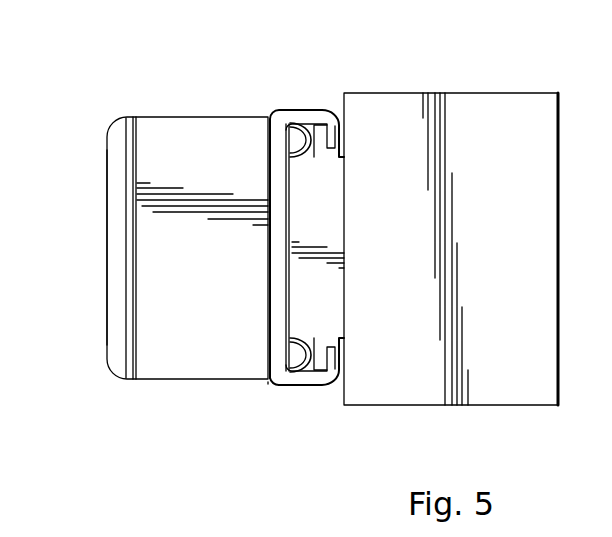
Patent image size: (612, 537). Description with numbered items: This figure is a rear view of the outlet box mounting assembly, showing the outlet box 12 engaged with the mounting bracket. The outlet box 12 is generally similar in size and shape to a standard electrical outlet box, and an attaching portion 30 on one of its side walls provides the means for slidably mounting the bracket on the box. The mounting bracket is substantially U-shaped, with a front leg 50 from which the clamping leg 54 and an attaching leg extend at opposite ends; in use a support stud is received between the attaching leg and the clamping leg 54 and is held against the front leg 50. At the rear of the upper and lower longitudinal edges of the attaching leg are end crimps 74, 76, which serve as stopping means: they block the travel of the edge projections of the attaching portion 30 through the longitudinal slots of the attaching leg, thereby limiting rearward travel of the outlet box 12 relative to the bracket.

The outlet box 12 is at (507, 88).
The attaching portion 30 is at (327, 222).
The front leg 50 is at (207, 82).
The clamping leg 54 is at (108, 274).
The end crimp 74 is at (298, 121).
The end crimp 76 is at (300, 376).